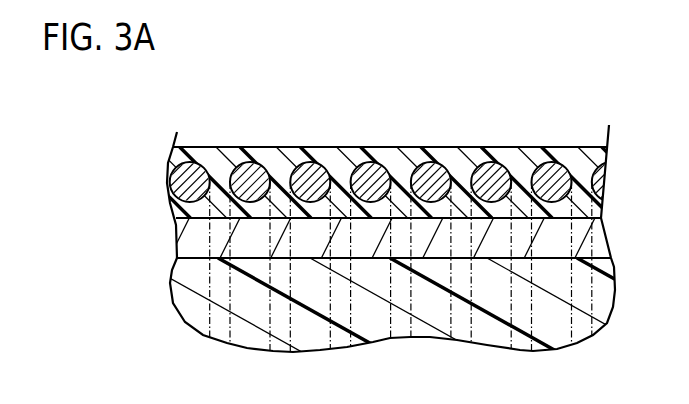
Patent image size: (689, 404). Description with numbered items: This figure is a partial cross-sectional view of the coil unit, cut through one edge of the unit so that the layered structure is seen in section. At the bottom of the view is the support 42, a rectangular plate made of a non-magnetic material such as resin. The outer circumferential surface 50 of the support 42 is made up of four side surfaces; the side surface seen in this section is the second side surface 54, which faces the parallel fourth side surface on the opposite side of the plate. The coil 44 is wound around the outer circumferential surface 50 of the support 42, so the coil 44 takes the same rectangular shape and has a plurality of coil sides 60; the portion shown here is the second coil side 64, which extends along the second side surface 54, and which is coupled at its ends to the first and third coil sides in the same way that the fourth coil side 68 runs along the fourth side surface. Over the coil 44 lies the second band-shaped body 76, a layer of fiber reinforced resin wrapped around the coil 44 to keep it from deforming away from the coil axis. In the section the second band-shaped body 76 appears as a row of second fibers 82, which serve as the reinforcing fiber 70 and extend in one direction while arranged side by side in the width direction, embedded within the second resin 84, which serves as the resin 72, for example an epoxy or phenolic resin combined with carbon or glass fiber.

The support 42 is at (192, 278).
The coil 44 is at (520, 228).
The outer circumferential surface 50 is at (603, 240).
The second side surface 54 is at (346, 240).
The second coil side 64 is at (400, 151).
The coil sides 60 is at (400, 182).
The fourth coil side 68 is at (402, 231).
The second band-shaped body 76 is at (291, 141).
The second fiber 82 is at (395, 152).
The fiber 70 is at (250, 160).
The second resin 84 is at (402, 152).
The resin 72 is at (343, 163).